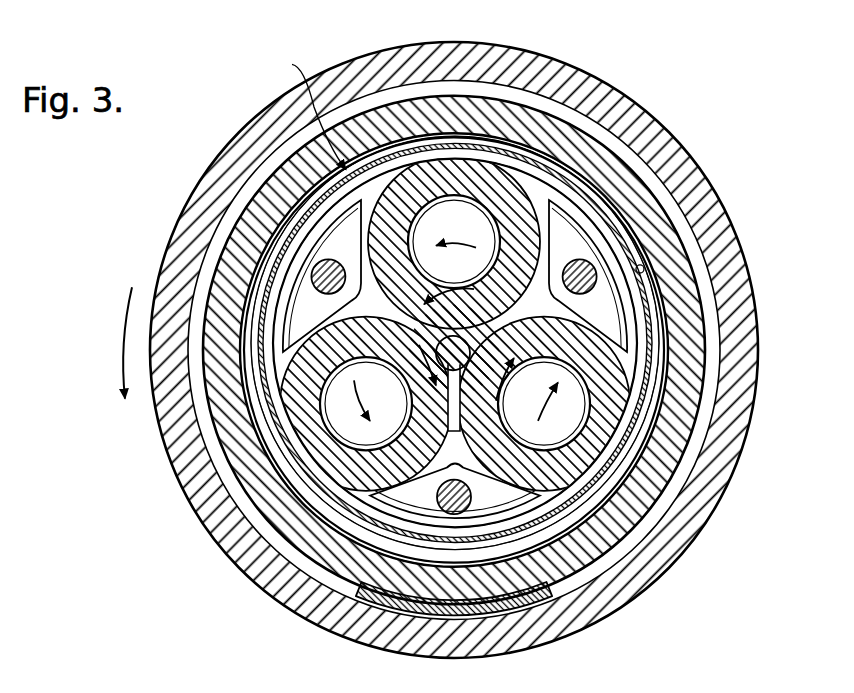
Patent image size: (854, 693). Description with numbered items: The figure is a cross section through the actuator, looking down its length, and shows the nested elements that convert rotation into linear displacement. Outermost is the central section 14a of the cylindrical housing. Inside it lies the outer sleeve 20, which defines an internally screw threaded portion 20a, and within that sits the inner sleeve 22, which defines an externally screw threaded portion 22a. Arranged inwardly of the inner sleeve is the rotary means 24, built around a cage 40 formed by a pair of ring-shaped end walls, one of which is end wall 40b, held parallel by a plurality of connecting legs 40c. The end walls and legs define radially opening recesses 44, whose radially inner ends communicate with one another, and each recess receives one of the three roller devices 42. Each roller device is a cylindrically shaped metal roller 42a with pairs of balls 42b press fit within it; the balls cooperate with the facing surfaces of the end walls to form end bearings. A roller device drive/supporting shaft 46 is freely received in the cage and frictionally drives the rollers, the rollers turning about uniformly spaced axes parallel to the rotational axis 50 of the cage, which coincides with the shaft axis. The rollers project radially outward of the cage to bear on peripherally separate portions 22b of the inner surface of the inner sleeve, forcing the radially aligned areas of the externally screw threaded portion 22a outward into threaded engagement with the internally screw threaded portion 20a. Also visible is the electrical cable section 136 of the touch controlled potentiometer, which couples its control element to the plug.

The central section 14a is at (454, 345).
The outer sleeve 20 is at (454, 347).
The internally screw threaded portion 20a is at (518, 349).
The inner sleeve 22 is at (502, 342).
The externally screw threaded portion 22a is at (453, 351).
The peripherally separate portions 22b is at (508, 281).
The rotary means 24 is at (301, 108).
The cage 40 is at (547, 322).
The end wall 40b is at (504, 370).
The connecting legs 40c is at (465, 358).
The roller devices 42 is at (486, 305).
The metal rollers 42a is at (457, 286).
The balls 42b is at (455, 322).
The radially opening recesses 44 is at (455, 359).
The roller device drive/supporting shaft 46 is at (413, 347).
The rotational axis 50 is at (439, 397).
The electrical cable section 136 is at (500, 615).